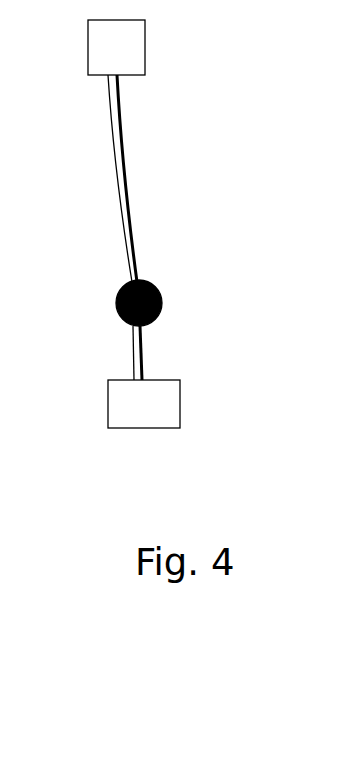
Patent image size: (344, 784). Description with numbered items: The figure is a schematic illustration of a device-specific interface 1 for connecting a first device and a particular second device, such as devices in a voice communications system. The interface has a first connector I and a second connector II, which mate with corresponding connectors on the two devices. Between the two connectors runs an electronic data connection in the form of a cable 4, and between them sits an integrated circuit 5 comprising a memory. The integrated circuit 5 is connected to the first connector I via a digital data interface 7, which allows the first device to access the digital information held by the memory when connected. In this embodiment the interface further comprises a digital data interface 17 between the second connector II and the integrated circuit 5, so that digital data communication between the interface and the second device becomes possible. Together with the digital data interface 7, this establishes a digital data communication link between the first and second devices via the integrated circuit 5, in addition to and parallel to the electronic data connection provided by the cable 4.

The device-specific interface 1 is at (178, 125).
The digital data interface 7 is at (118, 183).
The cable 4 is at (137, 231).
The integrated circuit 5 is at (162, 310).
The digital data interface 17 is at (135, 355).